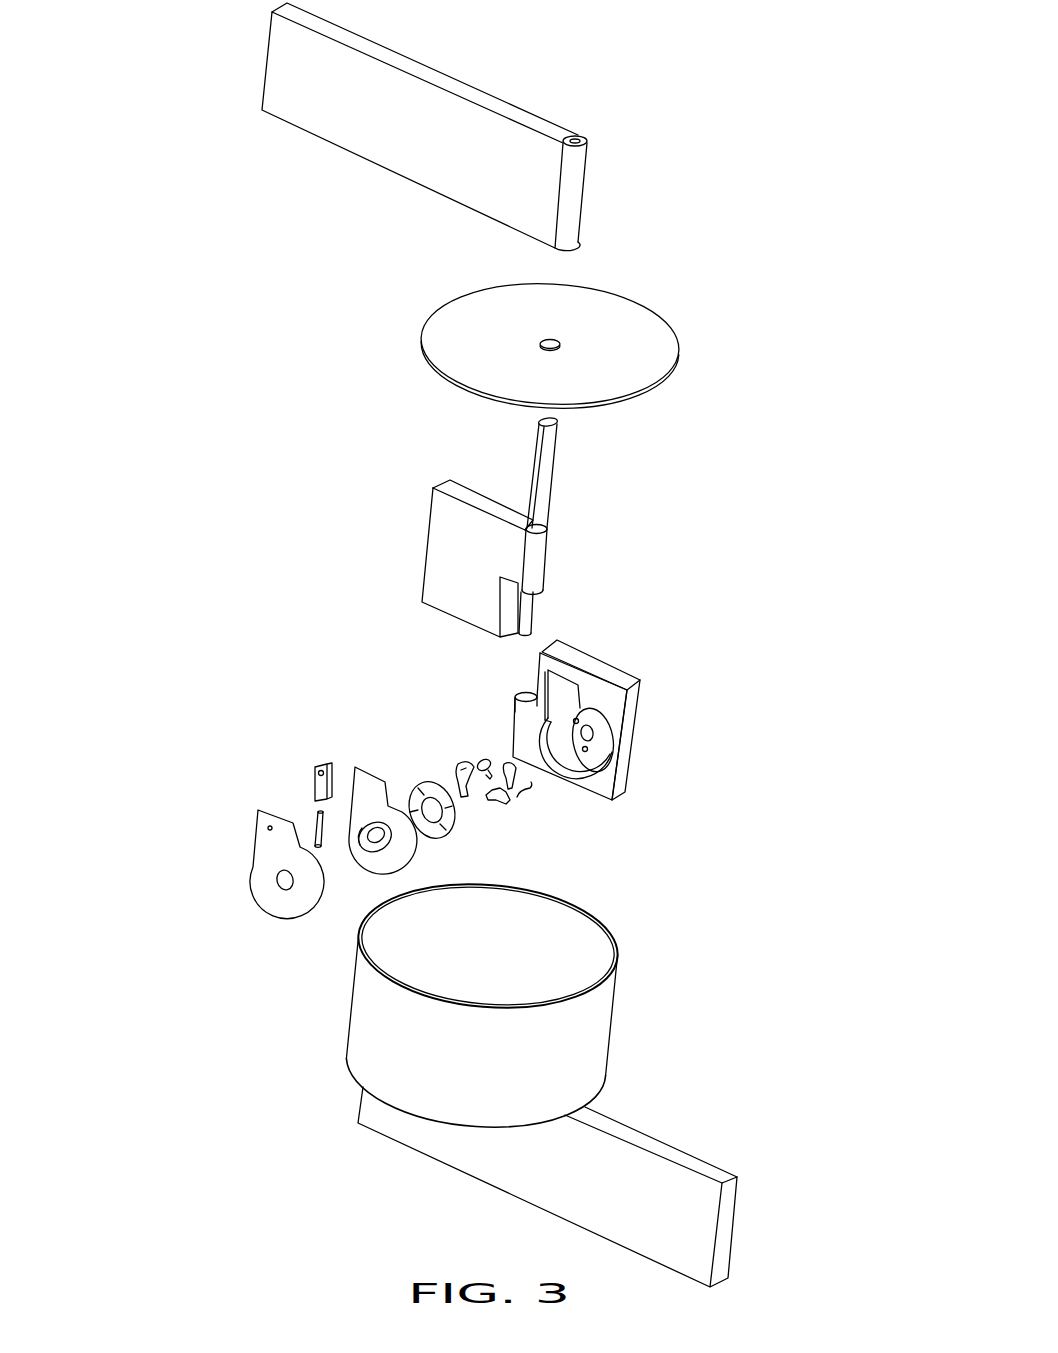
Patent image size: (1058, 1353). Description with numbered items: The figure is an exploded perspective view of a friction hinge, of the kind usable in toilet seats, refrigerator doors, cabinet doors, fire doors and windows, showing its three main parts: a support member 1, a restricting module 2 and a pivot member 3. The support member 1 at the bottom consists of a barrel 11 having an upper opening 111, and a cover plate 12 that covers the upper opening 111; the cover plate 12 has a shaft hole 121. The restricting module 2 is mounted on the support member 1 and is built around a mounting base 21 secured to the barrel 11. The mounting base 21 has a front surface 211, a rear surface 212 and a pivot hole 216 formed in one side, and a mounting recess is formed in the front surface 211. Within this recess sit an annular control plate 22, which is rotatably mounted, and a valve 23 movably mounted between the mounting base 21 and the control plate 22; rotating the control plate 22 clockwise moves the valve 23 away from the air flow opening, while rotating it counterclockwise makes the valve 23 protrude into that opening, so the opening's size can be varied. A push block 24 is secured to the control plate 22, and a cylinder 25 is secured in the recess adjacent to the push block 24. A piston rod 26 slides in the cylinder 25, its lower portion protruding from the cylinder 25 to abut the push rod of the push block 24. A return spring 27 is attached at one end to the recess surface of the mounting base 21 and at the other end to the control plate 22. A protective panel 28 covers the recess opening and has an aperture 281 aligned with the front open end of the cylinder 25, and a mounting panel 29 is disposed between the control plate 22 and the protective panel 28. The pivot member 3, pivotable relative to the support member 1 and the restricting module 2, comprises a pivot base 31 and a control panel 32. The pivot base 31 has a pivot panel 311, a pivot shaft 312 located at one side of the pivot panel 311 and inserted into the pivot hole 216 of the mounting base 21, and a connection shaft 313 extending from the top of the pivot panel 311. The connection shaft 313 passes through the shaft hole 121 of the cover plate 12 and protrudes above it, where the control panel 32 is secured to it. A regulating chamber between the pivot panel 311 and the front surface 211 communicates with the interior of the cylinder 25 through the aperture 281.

The support member 1 is at (643, 1047).
The barrel 11 is at (595, 1013).
The upper opening 111 is at (623, 940).
The cover plate 12 is at (633, 348).
The shaft hole 121 is at (560, 340).
The restricting module 2 is at (692, 673).
The mounting base 21 is at (610, 653).
The front surface 211 is at (603, 727).
The rear surface 212 is at (638, 710).
The pivot hole 216 is at (531, 692).
The control plate 22 is at (420, 788).
The valve 23 is at (488, 757).
The push block 24 is at (462, 767).
The cylinder 25 is at (317, 778).
The piston rod 26 is at (317, 817).
The return spring 27 is at (520, 793).
The protective panel 28 is at (273, 853).
The aperture 281 is at (268, 828).
The mounting panel 29 is at (367, 792).
The pivot member 3 is at (582, 542).
The pivot base 31 is at (398, 567).
The pivot panel 311 is at (453, 538).
The pivot shaft 312 is at (528, 610).
The connection shaft 313 is at (543, 483).
The control panel 32 is at (492, 173).